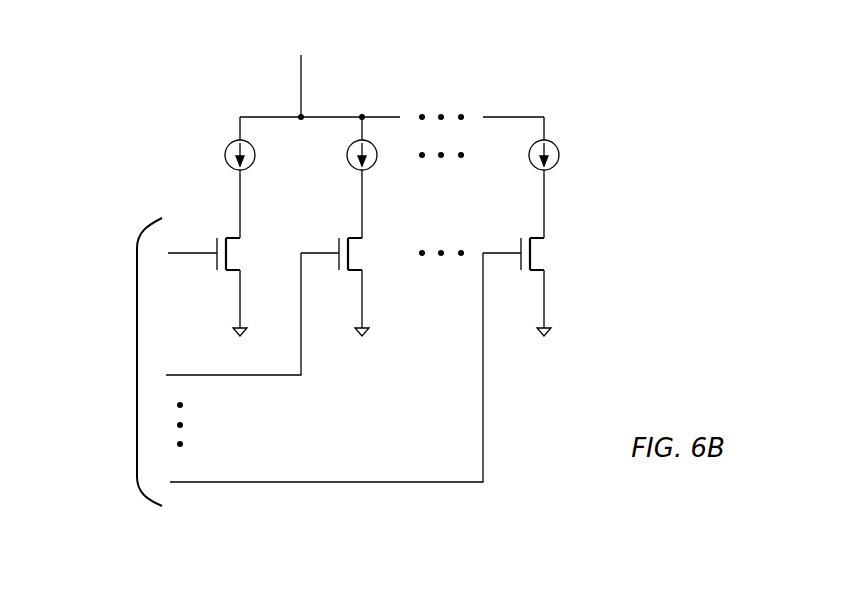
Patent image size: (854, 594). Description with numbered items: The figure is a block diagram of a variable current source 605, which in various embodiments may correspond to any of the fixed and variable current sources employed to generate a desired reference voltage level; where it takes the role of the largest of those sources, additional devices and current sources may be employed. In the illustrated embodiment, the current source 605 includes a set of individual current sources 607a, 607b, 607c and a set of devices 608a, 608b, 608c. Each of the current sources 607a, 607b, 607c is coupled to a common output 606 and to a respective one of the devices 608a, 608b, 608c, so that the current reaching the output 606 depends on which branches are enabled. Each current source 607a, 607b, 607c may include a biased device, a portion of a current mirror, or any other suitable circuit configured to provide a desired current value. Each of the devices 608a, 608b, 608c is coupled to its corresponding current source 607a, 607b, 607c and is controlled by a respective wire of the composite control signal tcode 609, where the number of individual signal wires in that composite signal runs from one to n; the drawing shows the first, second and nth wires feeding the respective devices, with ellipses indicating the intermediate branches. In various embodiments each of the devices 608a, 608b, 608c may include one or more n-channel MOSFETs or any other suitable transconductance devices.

The current source 605 is at (550, 66).
The output 606 is at (392, 64).
The current source 607a is at (256, 154).
The current source 607b is at (372, 166).
The current source 607c is at (560, 154).
The device 608a is at (243, 232).
The device 608b is at (365, 232).
The device 608c is at (547, 232).
The tcode 1:n 609 is at (137, 363).